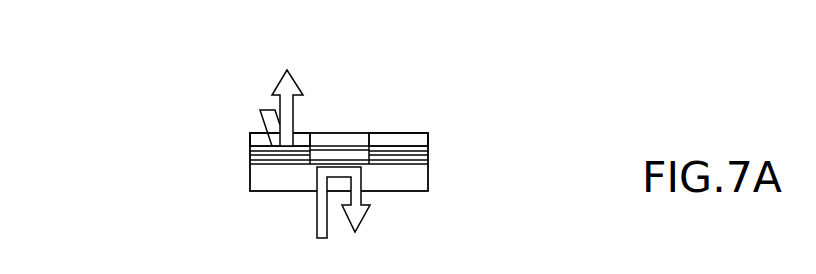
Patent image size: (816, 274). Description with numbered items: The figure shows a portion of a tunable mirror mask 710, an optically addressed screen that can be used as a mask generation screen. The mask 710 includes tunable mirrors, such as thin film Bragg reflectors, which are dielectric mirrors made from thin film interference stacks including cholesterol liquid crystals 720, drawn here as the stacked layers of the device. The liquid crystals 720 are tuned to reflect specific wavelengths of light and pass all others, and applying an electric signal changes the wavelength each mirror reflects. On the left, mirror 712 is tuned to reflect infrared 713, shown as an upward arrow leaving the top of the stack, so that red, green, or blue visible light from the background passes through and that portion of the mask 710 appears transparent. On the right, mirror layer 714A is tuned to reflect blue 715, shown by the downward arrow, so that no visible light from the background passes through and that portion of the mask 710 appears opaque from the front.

The tunable mirror mask 710 is at (496, 192).
The tunable mirror 712 is at (255, 142).
The infrared 713 is at (293, 116).
The tunable mirror layer 714A is at (374, 137).
The blue 715 is at (328, 228).
The cholesterol liquid crystals 720 is at (230, 161).